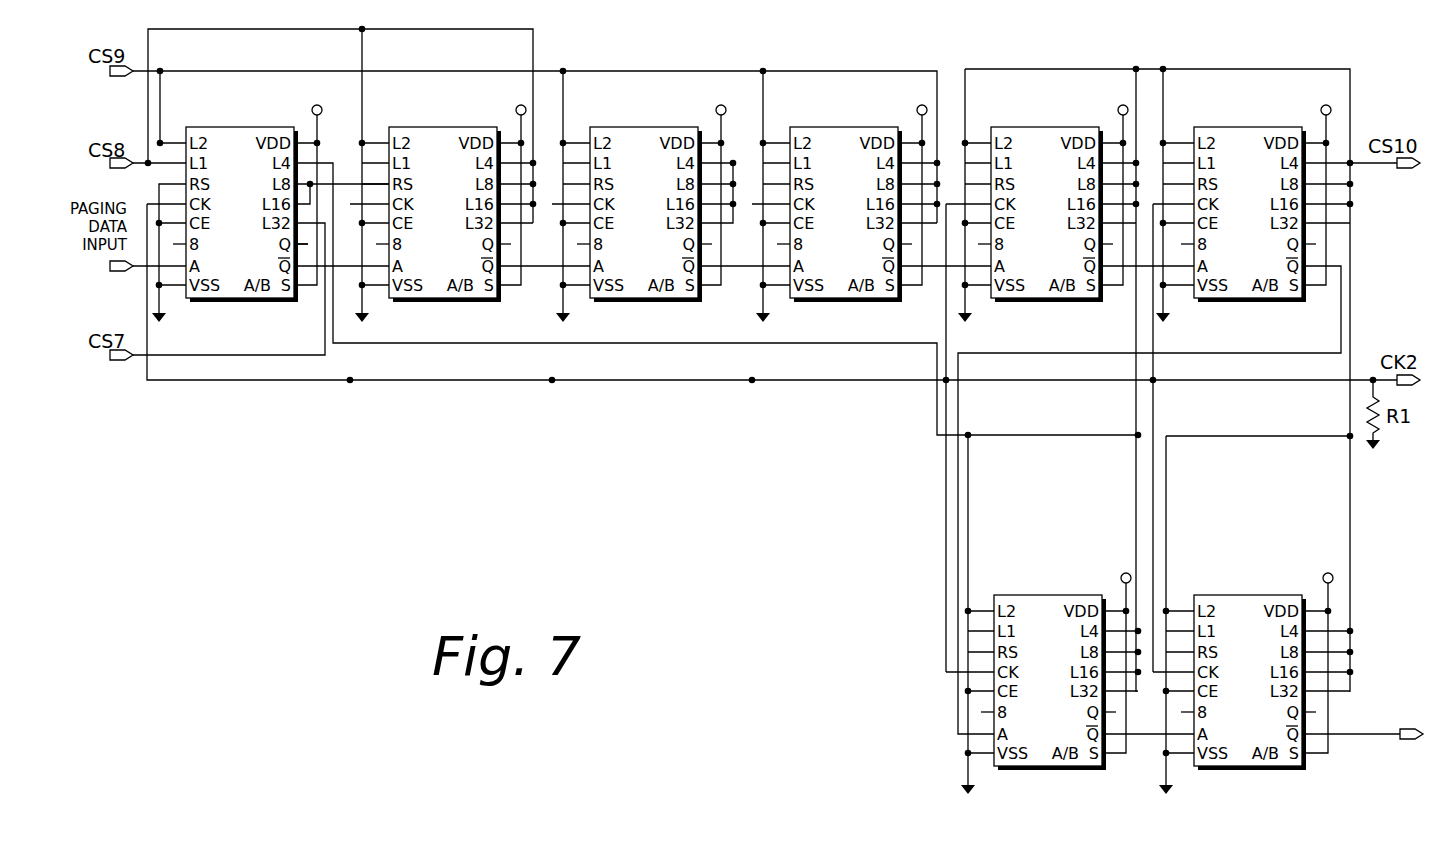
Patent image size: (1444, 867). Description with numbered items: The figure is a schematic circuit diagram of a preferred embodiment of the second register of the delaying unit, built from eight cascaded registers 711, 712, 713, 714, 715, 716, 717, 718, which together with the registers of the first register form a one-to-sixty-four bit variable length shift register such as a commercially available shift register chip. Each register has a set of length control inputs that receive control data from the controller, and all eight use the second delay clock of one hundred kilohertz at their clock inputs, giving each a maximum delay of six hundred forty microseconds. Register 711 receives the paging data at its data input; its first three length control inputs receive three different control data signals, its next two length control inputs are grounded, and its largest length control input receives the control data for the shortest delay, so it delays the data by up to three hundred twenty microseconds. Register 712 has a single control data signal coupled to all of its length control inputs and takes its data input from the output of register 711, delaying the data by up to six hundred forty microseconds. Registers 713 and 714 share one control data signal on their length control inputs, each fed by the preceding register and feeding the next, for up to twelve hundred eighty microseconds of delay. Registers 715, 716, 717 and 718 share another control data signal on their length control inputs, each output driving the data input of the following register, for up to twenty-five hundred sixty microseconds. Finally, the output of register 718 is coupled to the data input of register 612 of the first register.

The register 711 is at (242, 127).
The register 712 is at (445, 127).
The register 713 is at (646, 127).
The register 714 is at (846, 127).
The register 715 is at (1047, 127).
The register 716 is at (1250, 127).
The register 717 is at (1050, 595).
The register 718 is at (1250, 595).
The register 612 is at (1364, 714).